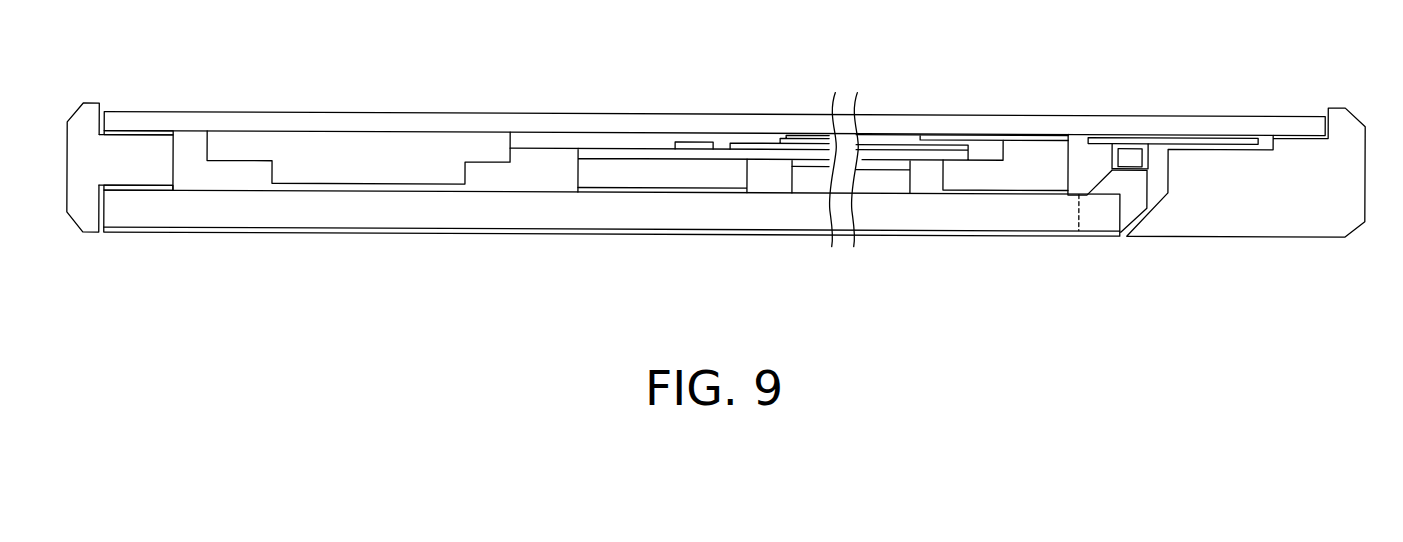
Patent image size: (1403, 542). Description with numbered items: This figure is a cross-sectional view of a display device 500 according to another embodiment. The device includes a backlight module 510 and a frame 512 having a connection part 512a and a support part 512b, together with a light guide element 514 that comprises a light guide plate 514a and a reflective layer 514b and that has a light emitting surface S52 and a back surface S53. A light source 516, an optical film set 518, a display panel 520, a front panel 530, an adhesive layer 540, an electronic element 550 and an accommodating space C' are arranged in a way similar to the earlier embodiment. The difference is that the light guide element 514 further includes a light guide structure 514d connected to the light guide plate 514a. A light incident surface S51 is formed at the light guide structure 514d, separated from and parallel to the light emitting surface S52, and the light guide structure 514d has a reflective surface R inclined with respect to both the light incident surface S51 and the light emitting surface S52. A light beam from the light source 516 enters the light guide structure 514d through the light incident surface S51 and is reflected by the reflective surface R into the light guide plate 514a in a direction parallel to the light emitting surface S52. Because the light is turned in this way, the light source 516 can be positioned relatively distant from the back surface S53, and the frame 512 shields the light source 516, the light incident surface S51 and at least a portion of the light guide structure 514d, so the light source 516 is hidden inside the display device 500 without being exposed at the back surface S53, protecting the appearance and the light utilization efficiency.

The display device 500 is at (1360, 26).
The backlight module 510 is at (766, 268).
The frame 512 is at (1323, 216).
The connection part 512a is at (162, 161).
The support part 512b is at (676, 176).
The light guide element 514 is at (1162, 314).
The light guide plate 514a is at (1053, 214).
The reflective layer 514b is at (1003, 234).
The light guide structure 514d is at (1103, 200).
The light source 516 is at (1128, 155).
The optical film set 518 is at (810, 176).
The display panel 520 is at (858, 147).
The front panel 530 is at (675, 123).
The adhesive layer 540 is at (145, 192).
The electronic element 550 is at (390, 149).
The accommodating space C' is at (540, 115).
The reflective surface R is at (1126, 209).
The light incident surface S51 is at (1135, 176).
The light emitting surface S52 is at (894, 185).
The back surface S53 is at (891, 247).